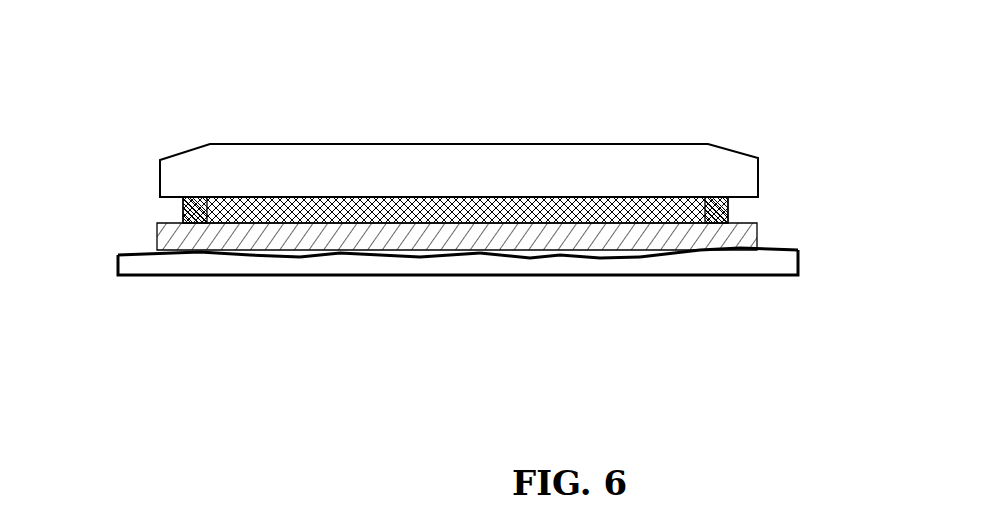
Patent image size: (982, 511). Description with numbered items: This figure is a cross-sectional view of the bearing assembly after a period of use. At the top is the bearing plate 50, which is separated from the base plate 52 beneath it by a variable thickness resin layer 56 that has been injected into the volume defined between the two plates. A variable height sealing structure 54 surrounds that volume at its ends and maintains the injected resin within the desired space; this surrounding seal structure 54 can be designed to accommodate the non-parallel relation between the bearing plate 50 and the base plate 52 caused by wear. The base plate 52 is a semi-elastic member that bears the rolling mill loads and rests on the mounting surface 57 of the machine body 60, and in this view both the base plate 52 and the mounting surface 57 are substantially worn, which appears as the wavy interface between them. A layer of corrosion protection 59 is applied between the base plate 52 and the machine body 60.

The bearing plate 50 is at (473, 155).
The base plate 52 is at (758, 227).
The sealing structure 54 is at (733, 201).
The resin layer 56 is at (578, 205).
The mounting surface 57 is at (130, 250).
The layer of corrosion protection 59 is at (325, 255).
The machine body 60 is at (780, 268).